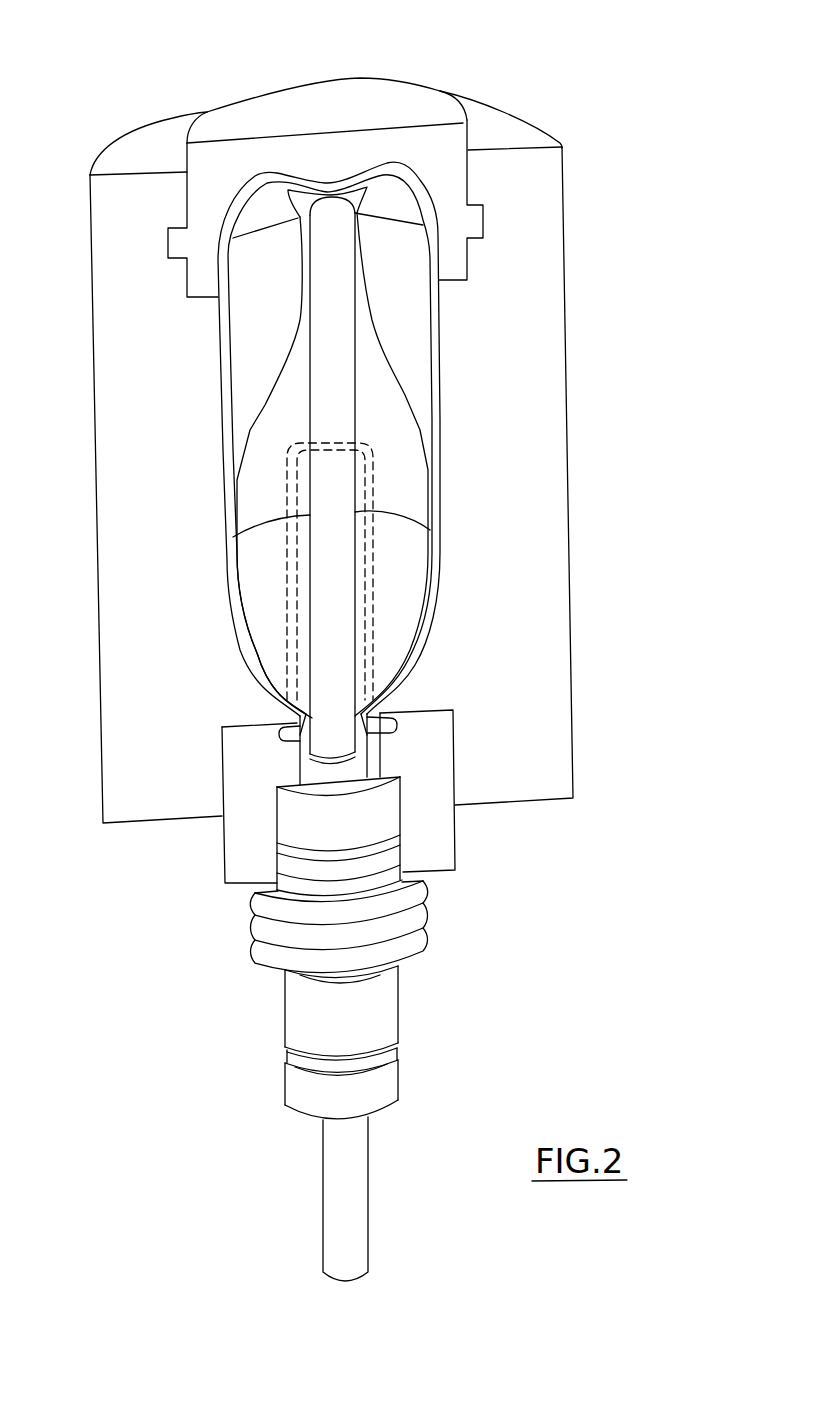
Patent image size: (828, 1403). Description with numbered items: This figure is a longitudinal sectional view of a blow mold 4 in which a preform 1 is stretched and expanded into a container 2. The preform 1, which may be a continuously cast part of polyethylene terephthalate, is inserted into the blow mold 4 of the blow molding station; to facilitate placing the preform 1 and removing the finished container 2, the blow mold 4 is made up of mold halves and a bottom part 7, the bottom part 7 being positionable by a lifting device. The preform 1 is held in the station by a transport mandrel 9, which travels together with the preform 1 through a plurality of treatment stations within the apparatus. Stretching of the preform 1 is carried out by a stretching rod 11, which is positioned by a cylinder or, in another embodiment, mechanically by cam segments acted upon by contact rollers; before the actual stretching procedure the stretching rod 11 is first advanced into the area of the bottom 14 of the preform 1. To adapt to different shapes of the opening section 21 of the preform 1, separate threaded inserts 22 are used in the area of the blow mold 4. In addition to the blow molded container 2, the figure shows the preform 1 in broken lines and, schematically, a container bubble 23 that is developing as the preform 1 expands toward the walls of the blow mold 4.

The preform 1 is at (378, 603).
The container 2 is at (435, 383).
The blow mold 4 is at (525, 447).
The bottom part 7 is at (411, 93).
The transport mandrel 9 is at (412, 940).
The stretching rod 11 is at (323, 1213).
The bottom 14 is at (363, 447).
The opening section 21 is at (428, 742).
The threaded inserts 22 is at (440, 830).
The container bubble 23 is at (382, 345).